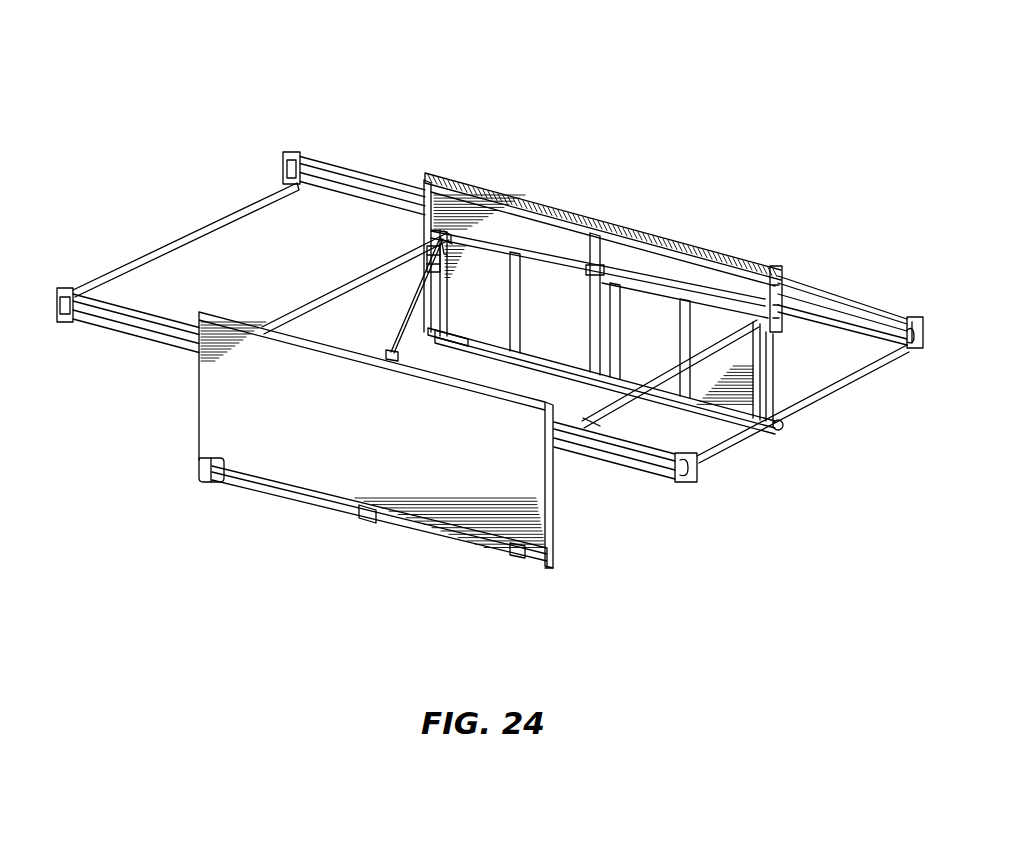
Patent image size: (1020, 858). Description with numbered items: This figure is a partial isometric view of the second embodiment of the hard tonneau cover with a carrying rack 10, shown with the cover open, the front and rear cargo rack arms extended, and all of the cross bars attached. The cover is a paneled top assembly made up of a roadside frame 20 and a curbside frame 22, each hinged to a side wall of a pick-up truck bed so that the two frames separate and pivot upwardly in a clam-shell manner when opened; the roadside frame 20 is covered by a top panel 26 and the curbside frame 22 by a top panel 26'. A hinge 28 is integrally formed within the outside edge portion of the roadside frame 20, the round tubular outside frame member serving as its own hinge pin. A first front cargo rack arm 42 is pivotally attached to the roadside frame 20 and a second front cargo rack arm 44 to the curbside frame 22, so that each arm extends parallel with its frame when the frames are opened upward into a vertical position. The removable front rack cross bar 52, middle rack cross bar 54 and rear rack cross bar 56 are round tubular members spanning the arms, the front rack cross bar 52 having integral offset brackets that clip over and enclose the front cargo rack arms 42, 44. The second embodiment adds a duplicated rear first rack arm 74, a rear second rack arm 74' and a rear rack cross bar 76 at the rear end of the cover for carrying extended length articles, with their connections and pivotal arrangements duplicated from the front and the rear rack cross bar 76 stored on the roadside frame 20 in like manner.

The hard tonneau cover with a carrying rack 10 is at (604, 183).
The roadside frame 20 is at (198, 455).
The curbside frame 22 is at (473, 180).
The top panel 26 is at (431, 451).
The top panel 26' is at (682, 221).
The hinge 28 is at (370, 515).
The first front cargo rack arm 42 is at (145, 345).
The second front cargo rack arm 44 is at (312, 152).
The front rack cross bar 52 is at (218, 223).
The middle rack cross bar 54 is at (328, 295).
The rear rack cross bar 56 is at (617, 410).
The rear first rack arm 74 is at (725, 507).
The rear second rack arm 74' is at (886, 290).
The rear rack cross bar 76 is at (803, 405).